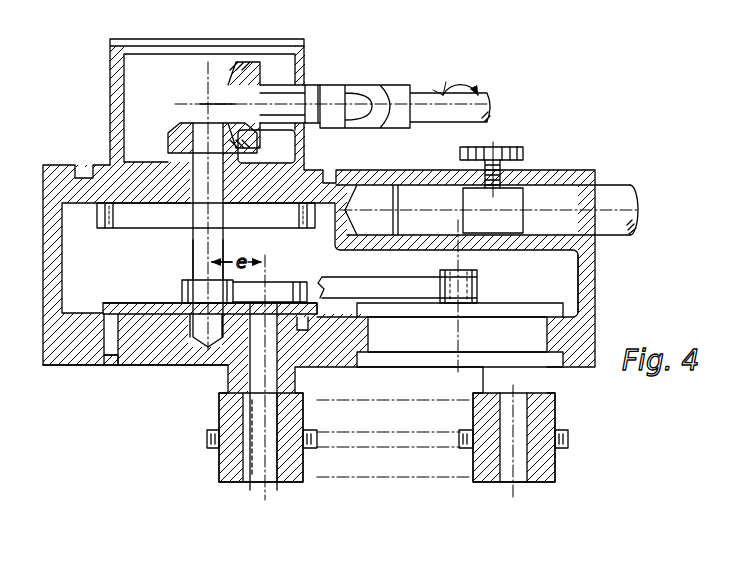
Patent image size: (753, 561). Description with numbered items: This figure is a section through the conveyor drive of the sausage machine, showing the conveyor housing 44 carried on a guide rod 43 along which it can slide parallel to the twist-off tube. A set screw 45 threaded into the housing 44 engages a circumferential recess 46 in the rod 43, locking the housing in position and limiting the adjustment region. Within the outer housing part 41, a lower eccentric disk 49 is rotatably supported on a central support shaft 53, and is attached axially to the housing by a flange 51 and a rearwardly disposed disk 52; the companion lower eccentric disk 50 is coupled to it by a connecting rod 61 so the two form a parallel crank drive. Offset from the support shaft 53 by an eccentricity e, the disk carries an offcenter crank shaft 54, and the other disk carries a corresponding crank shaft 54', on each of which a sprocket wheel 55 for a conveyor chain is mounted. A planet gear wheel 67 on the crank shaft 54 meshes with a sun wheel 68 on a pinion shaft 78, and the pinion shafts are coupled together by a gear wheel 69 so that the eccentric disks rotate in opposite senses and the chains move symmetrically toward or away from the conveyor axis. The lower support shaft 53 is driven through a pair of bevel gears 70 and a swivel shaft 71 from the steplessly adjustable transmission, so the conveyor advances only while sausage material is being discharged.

The housing 41 is at (587, 305).
The guide rod 43 is at (607, 195).
The conveyor housing 44 is at (558, 173).
The set screw 45 is at (517, 150).
The circumferential recess 46 is at (493, 225).
The lower eccentric disk 49 is at (152, 357).
The lower eccentric disk 50 is at (537, 343).
The flange 51 is at (112, 357).
The rearwardly disposed disk 52 is at (115, 307).
The central support shaft 53 is at (207, 255).
The crank shaft 54 is at (246, 459).
The crank shaft 54' is at (513, 452).
The sprocket wheel 55 is at (295, 475).
The connecting rod 61 is at (365, 285).
The planet gear wheel 67 is at (287, 290).
The sun wheel 68 is at (192, 288).
The gear wheel 69 is at (115, 218).
The bevel gear 70 is at (200, 96).
The swivel shaft 71 is at (422, 100).
The pinion shaft 78 is at (217, 246).